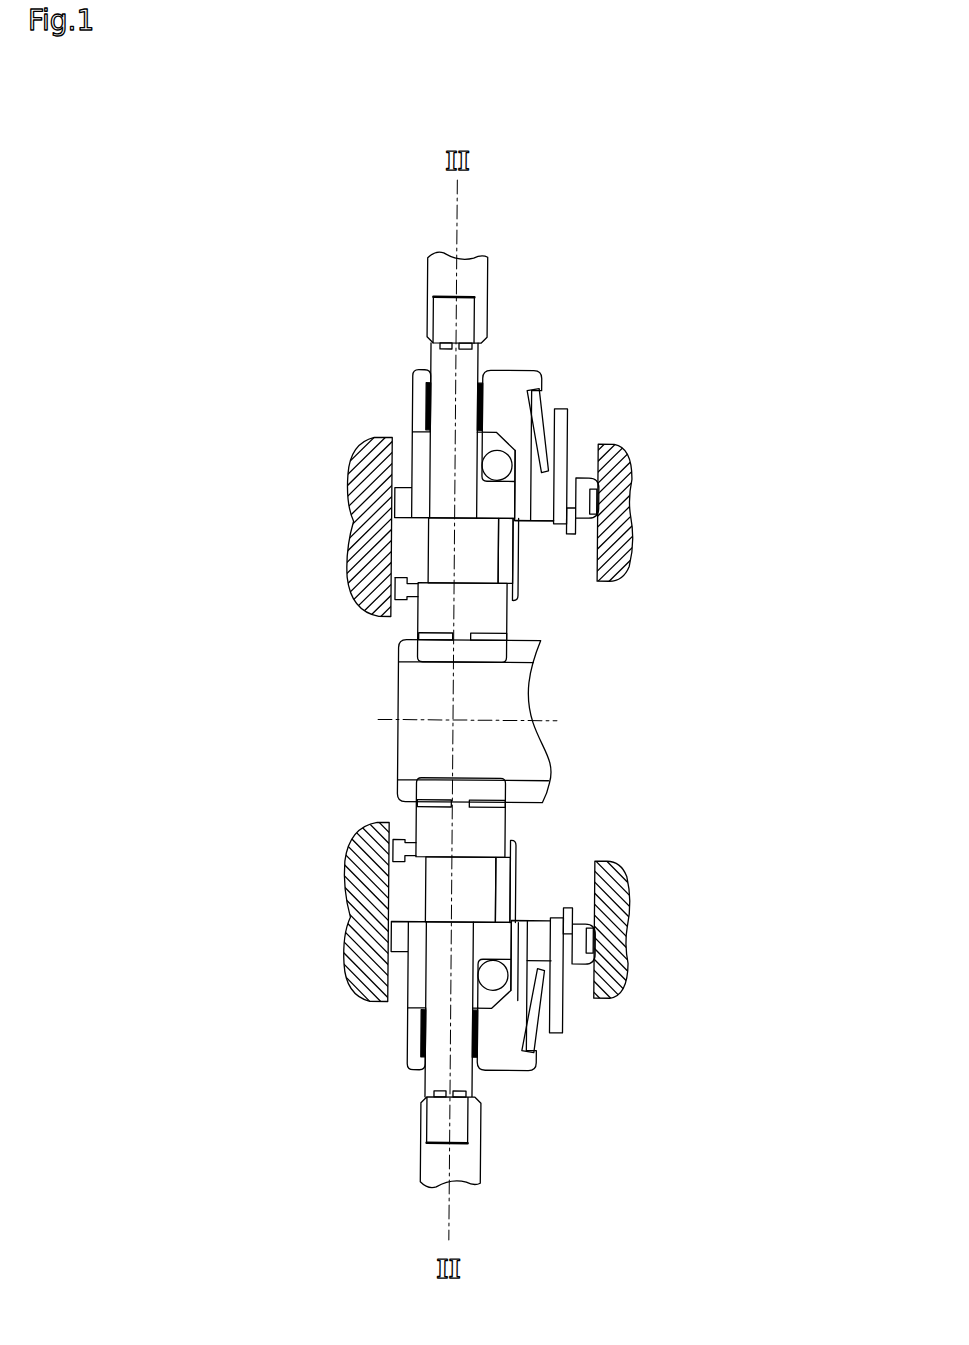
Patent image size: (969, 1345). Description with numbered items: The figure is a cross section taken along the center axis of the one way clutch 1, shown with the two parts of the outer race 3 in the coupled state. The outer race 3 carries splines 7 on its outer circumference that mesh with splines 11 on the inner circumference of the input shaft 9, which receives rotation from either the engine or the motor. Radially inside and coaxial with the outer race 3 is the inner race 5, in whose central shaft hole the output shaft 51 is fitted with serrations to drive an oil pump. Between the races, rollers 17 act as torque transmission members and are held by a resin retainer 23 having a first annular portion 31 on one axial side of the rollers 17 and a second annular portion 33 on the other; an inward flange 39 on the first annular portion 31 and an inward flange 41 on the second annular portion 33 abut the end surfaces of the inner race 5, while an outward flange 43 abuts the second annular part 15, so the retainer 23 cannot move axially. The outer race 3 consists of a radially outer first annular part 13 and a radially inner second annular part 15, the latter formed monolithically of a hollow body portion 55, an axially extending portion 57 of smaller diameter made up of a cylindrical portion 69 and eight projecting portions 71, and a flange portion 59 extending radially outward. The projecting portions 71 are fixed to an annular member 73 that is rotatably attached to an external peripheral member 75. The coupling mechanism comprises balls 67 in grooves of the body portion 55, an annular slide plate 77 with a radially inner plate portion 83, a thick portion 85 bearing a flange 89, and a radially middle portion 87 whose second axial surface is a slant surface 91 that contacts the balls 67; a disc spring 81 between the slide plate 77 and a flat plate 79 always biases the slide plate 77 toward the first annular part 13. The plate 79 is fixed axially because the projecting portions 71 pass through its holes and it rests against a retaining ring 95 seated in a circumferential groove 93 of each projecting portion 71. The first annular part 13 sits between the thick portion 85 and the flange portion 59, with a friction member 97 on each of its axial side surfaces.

The one way clutch 1 is at (645, 205).
The outer race 3 is at (263, 385).
The inner race 5 is at (430, 618).
The splines 7 is at (445, 328).
The input shaft 9 is at (440, 272).
The splines 11 is at (430, 314).
The first annular part 13 is at (433, 398).
The second annular part 15 is at (433, 472).
The rollers 17 is at (442, 548).
The retainer 23 is at (528, 558).
The first annular portion 31 is at (508, 568).
The second annular portion 33 is at (402, 588).
The flange 39 is at (518, 600).
The flange 41 is at (413, 606).
The flange 43 is at (402, 505).
The output shaft 51 is at (527, 752).
The body portion 55 is at (513, 943).
The axially extending portion 57 is at (538, 922).
The flange portion 59 is at (440, 1063).
The balls 67 is at (487, 976).
The cylindrical portion 69 is at (503, 930).
The projecting portions 71 is at (570, 950).
The annular member 73 is at (598, 935).
The peripheral member 75 is at (615, 888).
The slide plate 77 is at (513, 366).
The annular plate 79 is at (562, 420).
The disc spring 81 is at (538, 403).
The plate portion 83 is at (380, 898).
The thick portion 85 is at (470, 1010).
The radially middle portion 87 is at (523, 460).
The flange 89 is at (530, 373).
The slant surface 91 is at (550, 438).
The circumferential groove 93 is at (575, 522).
The retaining ring 95 is at (615, 512).
The friction member 97 is at (438, 402).